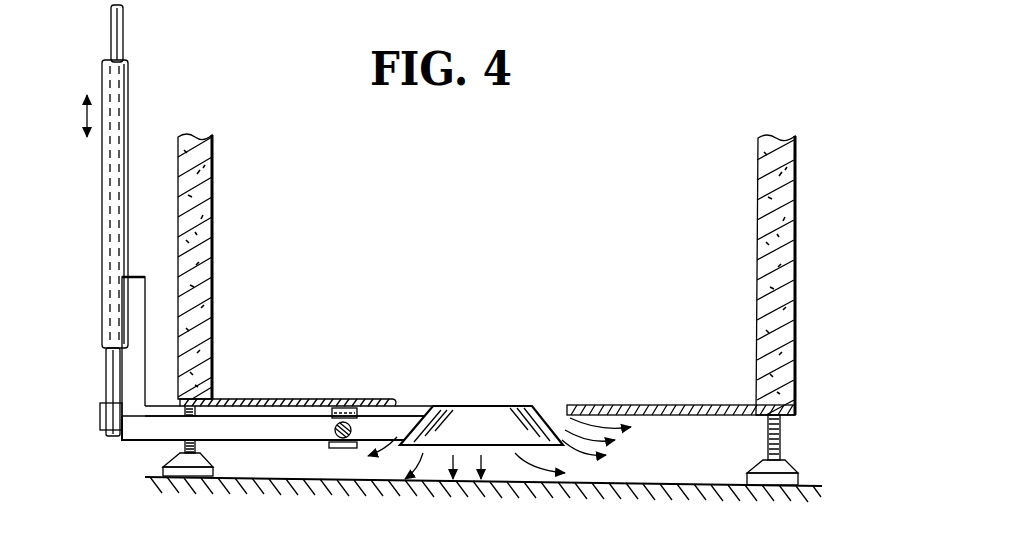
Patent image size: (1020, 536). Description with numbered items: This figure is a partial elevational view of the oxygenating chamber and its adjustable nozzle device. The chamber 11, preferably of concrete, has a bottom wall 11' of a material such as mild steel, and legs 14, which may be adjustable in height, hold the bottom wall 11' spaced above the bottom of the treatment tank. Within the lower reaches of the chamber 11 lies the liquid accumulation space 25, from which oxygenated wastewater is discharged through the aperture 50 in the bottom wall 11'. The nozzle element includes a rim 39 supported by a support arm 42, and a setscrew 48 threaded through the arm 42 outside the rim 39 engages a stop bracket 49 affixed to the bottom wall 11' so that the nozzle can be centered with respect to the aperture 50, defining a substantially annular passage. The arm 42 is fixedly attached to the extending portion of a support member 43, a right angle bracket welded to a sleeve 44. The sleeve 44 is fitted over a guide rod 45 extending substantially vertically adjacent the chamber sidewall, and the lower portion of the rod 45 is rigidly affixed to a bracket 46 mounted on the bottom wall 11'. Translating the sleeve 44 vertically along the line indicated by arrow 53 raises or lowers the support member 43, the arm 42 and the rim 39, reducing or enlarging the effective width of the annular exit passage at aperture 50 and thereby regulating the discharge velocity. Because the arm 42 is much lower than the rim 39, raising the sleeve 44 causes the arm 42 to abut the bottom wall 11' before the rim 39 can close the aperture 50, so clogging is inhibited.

The chamber 11 is at (287, 270).
The bottom wall 11' is at (681, 275).
The legs 14 is at (185, 447).
The liquid accumulation space 25 is at (449, 236).
The rim 39 is at (497, 434).
The support arm 42 is at (147, 428).
The support member 43 is at (143, 297).
The sleeve 44 is at (100, 202).
The guide rod 45 is at (123, 28).
The bracket 46 is at (157, 405).
The setscrew 48 is at (343, 407).
The stop bracket 49 is at (338, 447).
The aperture 50 is at (548, 406).
The arrow 53 is at (80, 119).